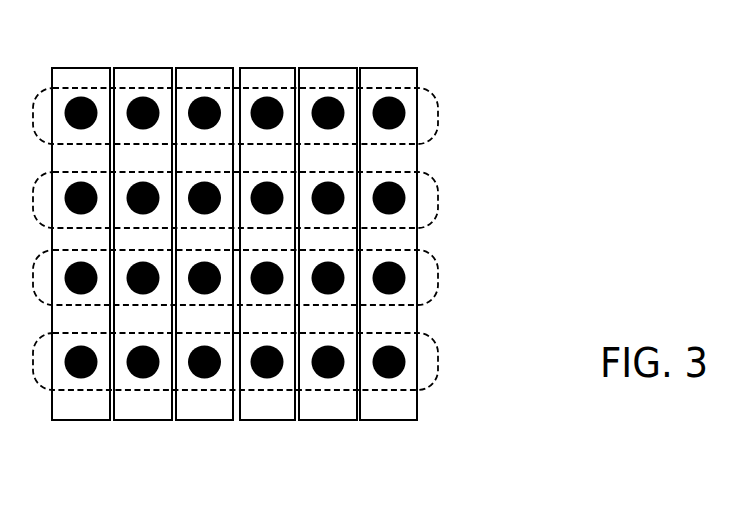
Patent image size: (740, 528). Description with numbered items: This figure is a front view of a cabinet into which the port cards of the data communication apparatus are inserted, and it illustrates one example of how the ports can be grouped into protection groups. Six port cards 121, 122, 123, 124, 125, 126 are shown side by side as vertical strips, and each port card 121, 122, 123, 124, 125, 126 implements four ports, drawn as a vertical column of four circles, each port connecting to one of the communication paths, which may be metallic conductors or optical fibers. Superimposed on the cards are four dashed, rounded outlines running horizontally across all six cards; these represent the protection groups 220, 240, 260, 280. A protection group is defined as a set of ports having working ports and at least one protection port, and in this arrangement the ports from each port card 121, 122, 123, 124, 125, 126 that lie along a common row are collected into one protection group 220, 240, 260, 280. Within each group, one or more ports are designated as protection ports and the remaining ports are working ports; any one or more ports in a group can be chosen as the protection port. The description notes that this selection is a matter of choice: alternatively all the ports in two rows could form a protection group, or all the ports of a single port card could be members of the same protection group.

The port card 121 is at (82, 67).
The port card 122 is at (143, 421).
The port card 123 is at (209, 67).
The port card 124 is at (265, 421).
The port card 125 is at (328, 66).
The port card 126 is at (402, 420).
The protection group 220 is at (438, 112).
The protection group 240 is at (438, 197).
The protection group 260 is at (438, 267).
The protection group 280 is at (438, 362).